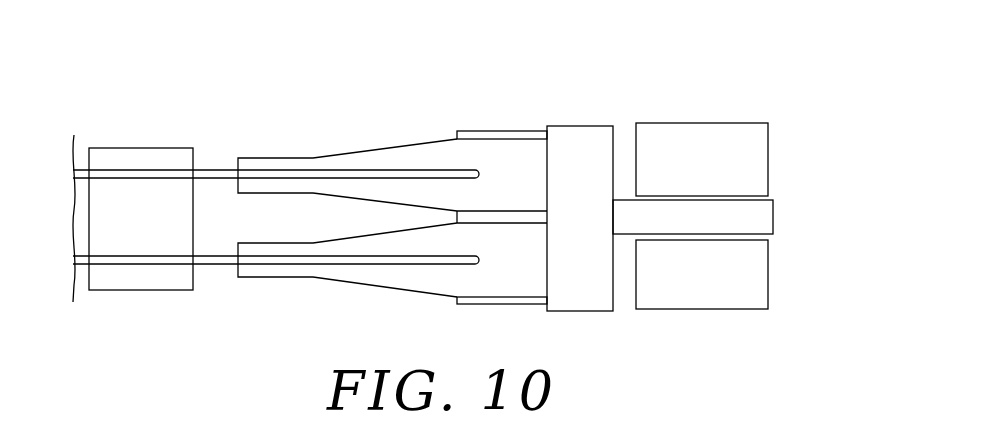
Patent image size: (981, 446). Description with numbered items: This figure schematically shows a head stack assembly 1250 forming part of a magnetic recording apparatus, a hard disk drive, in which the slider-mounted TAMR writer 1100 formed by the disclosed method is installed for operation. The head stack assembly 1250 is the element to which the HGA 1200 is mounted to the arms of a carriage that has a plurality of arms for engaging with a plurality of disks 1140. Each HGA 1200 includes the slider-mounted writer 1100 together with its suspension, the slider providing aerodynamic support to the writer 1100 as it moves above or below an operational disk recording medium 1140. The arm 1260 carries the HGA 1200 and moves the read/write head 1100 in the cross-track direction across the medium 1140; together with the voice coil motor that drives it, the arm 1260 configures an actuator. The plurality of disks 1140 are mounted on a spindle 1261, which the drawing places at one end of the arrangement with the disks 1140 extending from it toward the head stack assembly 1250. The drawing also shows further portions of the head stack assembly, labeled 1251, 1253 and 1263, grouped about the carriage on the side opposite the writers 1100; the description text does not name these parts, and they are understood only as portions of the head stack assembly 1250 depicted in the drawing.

The slider-mounted TAMR writer 1100 is at (237, 158).
The disk recording medium 1140 is at (207, 173).
The head gimbal assembly 1200 is at (332, 157).
The head stack assembly 1250 is at (702, 203).
The connector body 1251 is at (580, 300).
The connector rod 1253 is at (762, 217).
The arm 1260 is at (467, 130).
The spindle 1261 is at (130, 162).
The terminal block 1263 is at (702, 138).